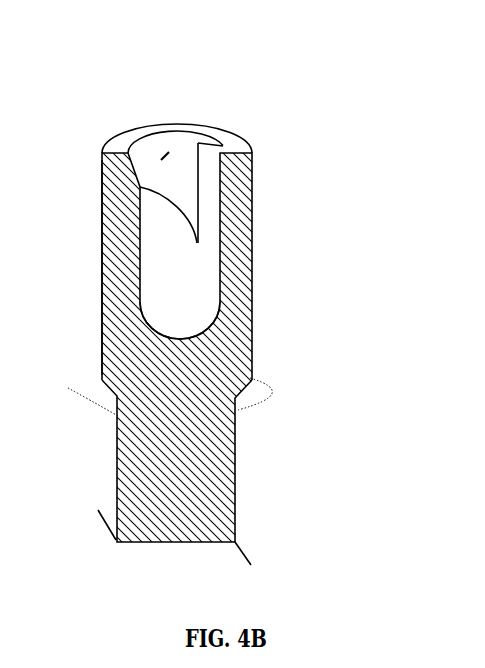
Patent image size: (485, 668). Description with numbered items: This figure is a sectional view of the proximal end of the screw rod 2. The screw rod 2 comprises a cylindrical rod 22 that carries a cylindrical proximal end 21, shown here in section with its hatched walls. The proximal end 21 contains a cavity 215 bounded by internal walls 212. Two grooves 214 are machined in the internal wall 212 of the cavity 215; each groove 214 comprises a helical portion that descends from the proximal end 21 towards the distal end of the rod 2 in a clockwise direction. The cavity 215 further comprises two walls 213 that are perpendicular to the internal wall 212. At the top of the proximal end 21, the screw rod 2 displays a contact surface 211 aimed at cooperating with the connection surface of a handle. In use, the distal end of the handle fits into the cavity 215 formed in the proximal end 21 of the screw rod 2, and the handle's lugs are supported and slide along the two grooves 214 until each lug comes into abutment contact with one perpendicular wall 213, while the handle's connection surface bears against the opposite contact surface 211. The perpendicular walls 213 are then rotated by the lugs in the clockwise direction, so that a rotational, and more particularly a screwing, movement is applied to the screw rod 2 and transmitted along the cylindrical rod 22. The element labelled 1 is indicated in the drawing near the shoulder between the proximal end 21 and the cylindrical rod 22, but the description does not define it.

The mounting part / counterpart 1 is at (92, 374).
The screw rod 2 is at (242, 313).
The proximal end 21 is at (215, 203).
The cylindrical rod 22 is at (116, 450).
The contact surface 211 is at (163, 190).
The internal wall 212 is at (101, 218).
The perpendicular wall 213 is at (130, 135).
The groove 214 is at (142, 186).
The cavity 215 is at (187, 259).